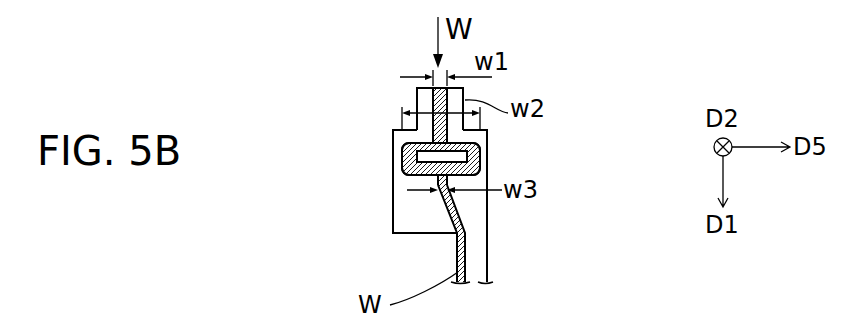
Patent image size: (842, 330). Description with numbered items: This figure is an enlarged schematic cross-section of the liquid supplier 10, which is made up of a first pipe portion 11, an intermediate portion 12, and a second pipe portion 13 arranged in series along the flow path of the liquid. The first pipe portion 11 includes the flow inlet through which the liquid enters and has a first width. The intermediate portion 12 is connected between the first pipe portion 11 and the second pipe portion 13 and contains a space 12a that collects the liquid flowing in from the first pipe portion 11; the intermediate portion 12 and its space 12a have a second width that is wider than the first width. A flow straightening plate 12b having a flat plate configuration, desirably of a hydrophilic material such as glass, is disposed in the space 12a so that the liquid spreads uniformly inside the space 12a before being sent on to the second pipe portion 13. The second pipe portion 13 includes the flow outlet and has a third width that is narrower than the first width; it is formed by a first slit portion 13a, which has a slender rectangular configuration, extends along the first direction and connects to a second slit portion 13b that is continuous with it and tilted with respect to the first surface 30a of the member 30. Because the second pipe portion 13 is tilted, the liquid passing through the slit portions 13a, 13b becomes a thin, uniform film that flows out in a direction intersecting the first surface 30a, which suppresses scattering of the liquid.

The liquid supplier 10 is at (429, 162).
The first pipe portion 11 is at (463, 90).
The intermediate portion 12 is at (441, 153).
The space 12a is at (410, 156).
The flow straightening plate 12b is at (480, 164).
The second pipe portion 13 is at (361, 228).
The first slit portion 13a is at (438, 180).
The second slit portion 13b is at (449, 213).
The first surface 30 is at (460, 207).
The first surface 30a is at (457, 260).